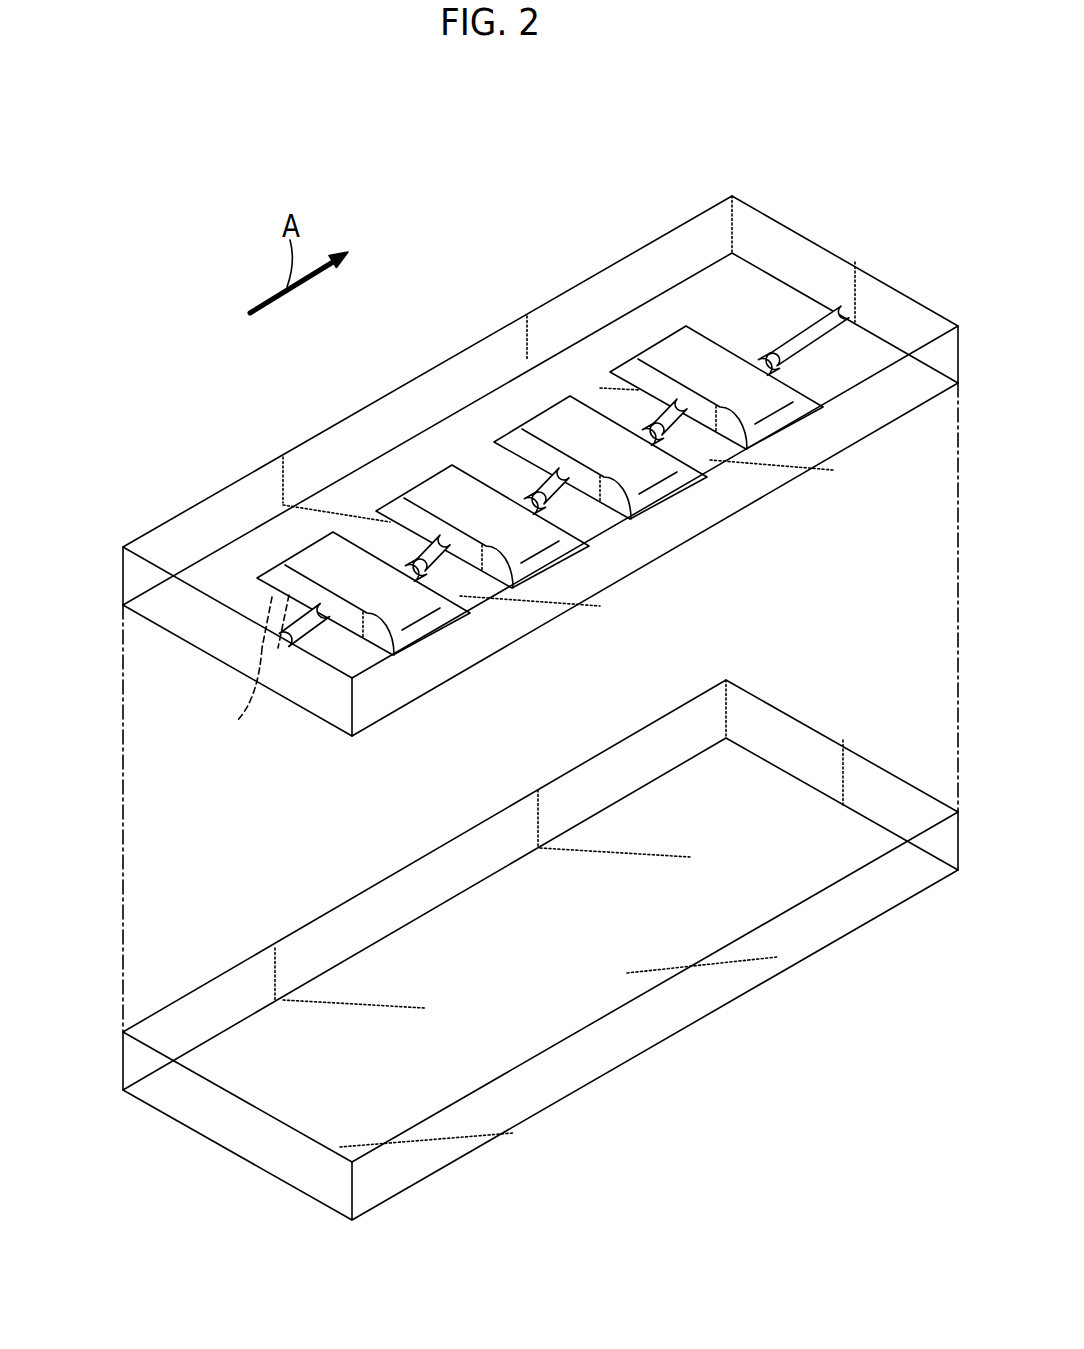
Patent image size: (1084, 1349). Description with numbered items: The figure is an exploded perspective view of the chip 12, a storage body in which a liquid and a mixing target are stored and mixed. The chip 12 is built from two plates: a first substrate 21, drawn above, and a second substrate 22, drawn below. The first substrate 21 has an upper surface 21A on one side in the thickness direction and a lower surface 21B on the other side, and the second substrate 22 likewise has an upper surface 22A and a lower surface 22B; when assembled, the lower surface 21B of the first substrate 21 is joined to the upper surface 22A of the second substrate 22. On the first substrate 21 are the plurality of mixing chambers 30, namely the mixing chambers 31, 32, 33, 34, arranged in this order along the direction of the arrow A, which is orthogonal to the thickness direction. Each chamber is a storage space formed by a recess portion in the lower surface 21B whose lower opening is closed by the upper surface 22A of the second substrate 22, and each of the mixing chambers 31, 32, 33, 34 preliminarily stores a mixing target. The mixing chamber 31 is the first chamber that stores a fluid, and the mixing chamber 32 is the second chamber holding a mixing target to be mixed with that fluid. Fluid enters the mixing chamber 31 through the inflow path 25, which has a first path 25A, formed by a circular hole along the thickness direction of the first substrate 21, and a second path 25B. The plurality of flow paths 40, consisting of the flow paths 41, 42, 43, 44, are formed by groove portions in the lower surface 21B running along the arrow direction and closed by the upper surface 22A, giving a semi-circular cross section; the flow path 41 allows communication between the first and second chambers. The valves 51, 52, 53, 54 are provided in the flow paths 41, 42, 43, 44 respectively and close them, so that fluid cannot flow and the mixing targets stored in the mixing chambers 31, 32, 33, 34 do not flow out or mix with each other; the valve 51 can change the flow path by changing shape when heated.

The chip 12 is at (127, 330).
The first substrate 21 is at (123, 585).
The upper surface 21A is at (187, 505).
The lower surface 21B is at (190, 617).
The second substrate 22 is at (123, 1061).
The upper surface 22A is at (189, 992).
The lower surface 22B is at (261, 1135).
The inflow path 25 is at (183, 712).
The first path 25A is at (238, 671).
The second path 25B is at (300, 640).
The mixing chambers 30 is at (597, 547).
The mixing chamber 31 is at (420, 632).
The mixing chamber 32 is at (552, 556).
The mixing chamber 33 is at (665, 487).
The mixing chamber 34 is at (780, 418).
The flow paths 40 is at (607, 369).
The flow path 41 is at (446, 538).
The flow path 42 is at (564, 473).
The flow path 43 is at (684, 404).
The flow path 44 is at (845, 312).
The valve 51 is at (410, 573).
The valve 52 is at (526, 510).
The valve 53 is at (644, 441).
The valve 54 is at (760, 371).